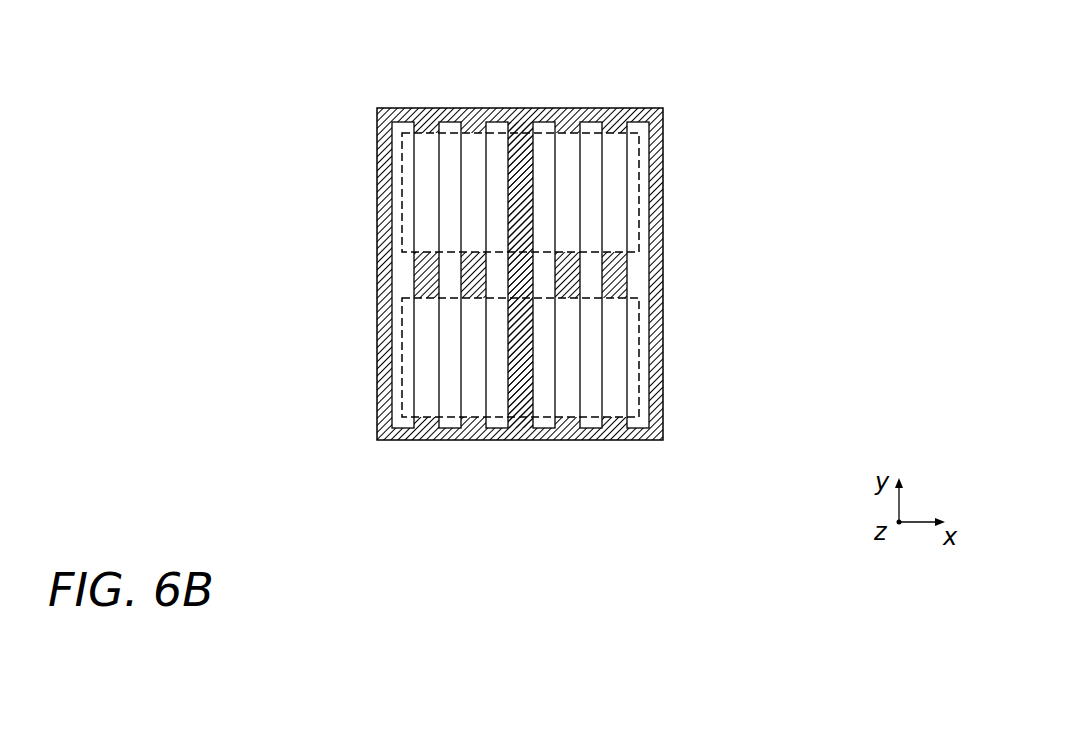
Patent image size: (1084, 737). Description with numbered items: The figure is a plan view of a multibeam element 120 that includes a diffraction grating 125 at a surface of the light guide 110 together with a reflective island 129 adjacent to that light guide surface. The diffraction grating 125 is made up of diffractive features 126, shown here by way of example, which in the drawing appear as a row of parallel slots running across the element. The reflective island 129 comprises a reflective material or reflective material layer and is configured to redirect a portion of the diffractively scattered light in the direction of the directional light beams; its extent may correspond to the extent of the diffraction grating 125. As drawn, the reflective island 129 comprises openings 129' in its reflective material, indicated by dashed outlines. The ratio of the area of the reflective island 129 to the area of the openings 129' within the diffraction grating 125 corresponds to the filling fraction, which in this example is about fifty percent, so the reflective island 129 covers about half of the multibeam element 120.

The multibeam element 120 is at (575, 269).
The diffraction grating 125 is at (425, 101).
The diffractive features 126 is at (490, 122).
The reflective island 129 is at (520, 324).
The openings 129' is at (582, 264).
The light guide 110 is at (746, 273).